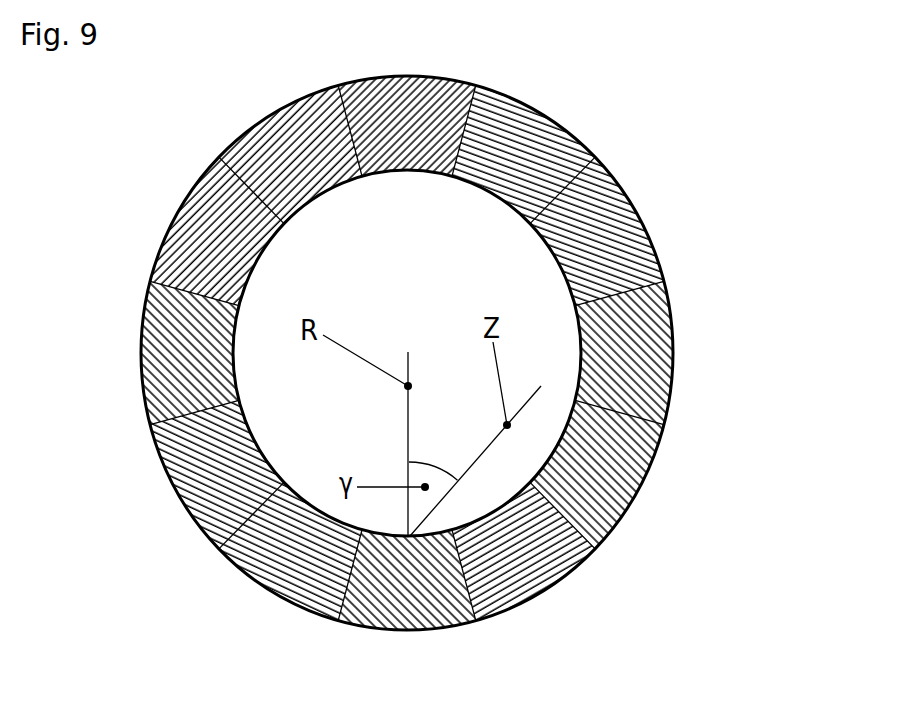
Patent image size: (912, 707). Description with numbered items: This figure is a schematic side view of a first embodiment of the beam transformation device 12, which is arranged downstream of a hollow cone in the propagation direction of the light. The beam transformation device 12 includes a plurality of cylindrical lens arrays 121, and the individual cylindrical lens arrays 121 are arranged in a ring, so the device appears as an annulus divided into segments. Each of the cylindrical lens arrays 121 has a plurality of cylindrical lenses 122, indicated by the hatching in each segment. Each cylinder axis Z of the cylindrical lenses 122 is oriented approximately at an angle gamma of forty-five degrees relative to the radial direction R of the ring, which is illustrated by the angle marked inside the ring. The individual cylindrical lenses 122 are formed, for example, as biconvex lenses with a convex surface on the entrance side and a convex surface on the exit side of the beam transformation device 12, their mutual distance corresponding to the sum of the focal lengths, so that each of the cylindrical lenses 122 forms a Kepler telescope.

The beam transformation device 12 is at (446, 367).
The cylindrical lens array 121 is at (691, 326).
The cylindrical lens 122 is at (592, 208).